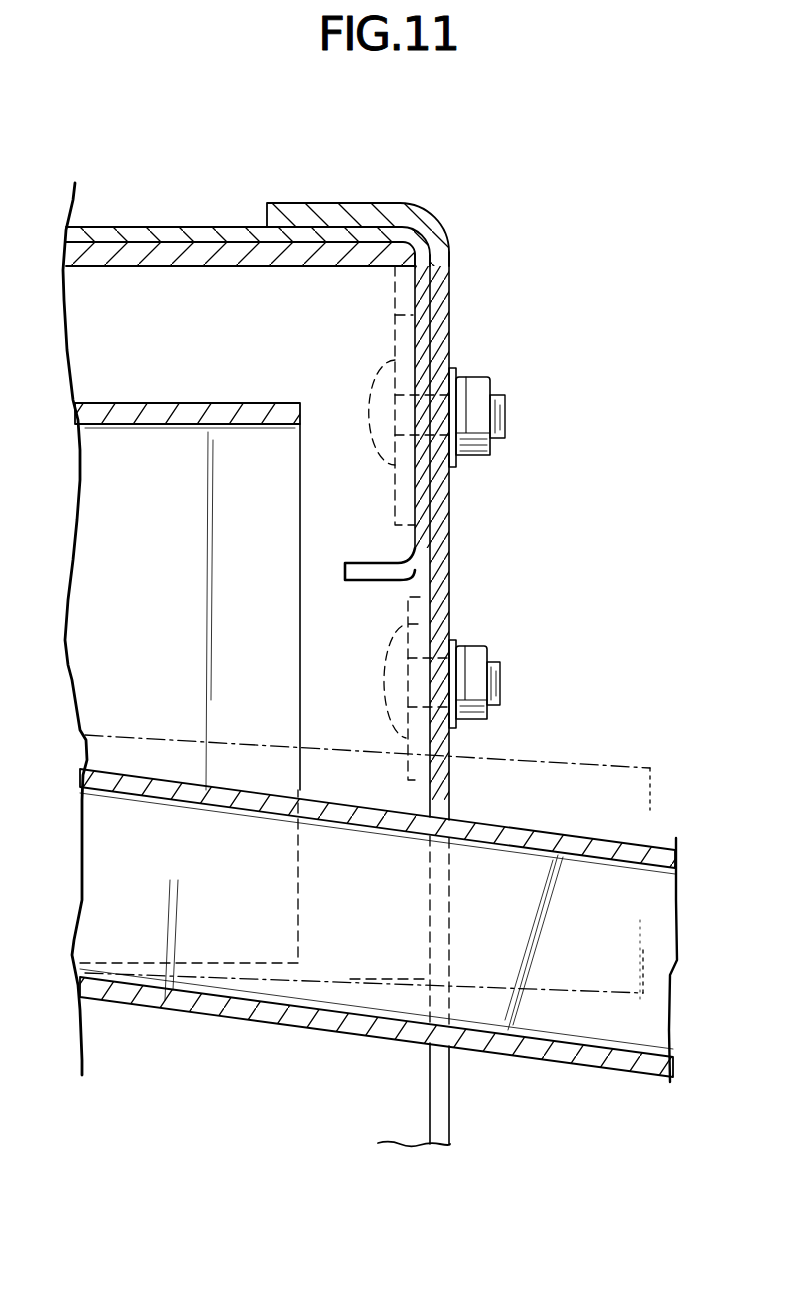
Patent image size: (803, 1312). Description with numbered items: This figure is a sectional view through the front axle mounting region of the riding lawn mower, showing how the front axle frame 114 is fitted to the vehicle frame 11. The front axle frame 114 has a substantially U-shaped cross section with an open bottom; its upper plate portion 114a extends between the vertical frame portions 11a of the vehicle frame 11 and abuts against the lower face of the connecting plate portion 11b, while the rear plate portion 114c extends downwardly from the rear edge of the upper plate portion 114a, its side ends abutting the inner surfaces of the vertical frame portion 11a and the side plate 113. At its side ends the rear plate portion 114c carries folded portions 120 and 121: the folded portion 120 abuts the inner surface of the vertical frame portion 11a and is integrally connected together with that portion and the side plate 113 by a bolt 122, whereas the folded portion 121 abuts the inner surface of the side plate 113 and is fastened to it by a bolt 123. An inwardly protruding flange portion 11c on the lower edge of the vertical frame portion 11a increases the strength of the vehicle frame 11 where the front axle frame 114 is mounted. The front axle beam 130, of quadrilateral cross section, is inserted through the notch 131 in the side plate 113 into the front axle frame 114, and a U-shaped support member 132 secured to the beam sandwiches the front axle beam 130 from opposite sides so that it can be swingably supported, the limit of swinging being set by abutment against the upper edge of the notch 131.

The vehicle frame 11 is at (143, 216).
The vertical frame portion 11a is at (413, 373).
The connecting plate portion 11b is at (238, 226).
The flange portion 11c is at (358, 585).
The side plate 113 is at (442, 508).
The front axle frame 114 is at (271, 278).
The upper plate portion 114a is at (344, 240).
The rear plate portion 114c is at (380, 618).
The folded portion 120 is at (392, 512).
The folded portion 121 is at (388, 755).
The bolt 122 is at (505, 418).
The bolt 123 is at (495, 678).
The front axle beam 130 is at (272, 1012).
The notch 131 is at (436, 762).
The support member 132 is at (130, 410).